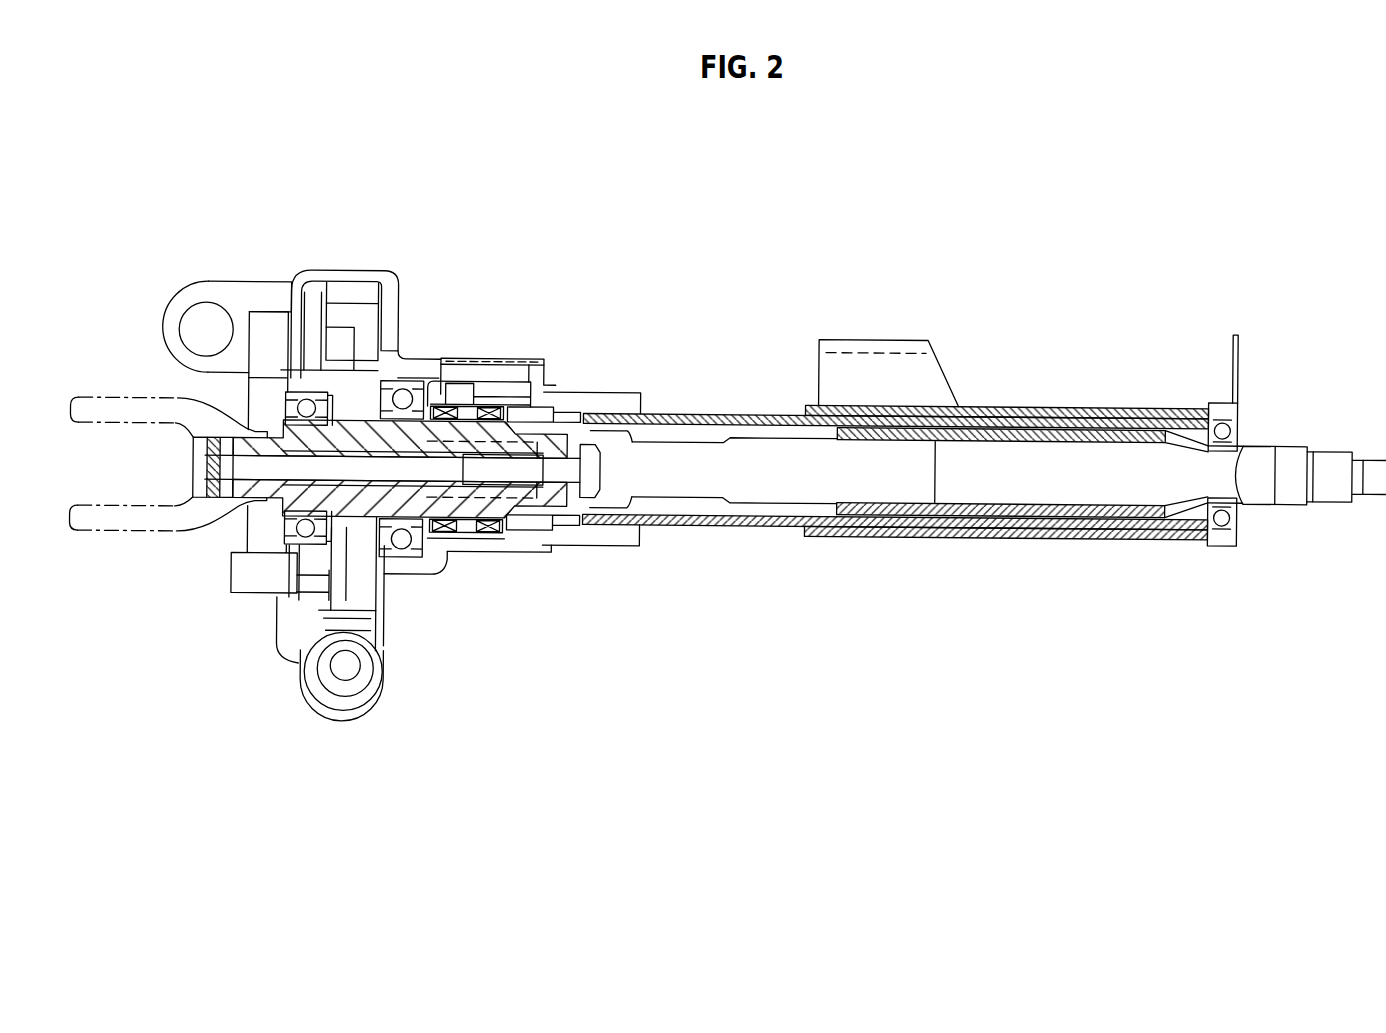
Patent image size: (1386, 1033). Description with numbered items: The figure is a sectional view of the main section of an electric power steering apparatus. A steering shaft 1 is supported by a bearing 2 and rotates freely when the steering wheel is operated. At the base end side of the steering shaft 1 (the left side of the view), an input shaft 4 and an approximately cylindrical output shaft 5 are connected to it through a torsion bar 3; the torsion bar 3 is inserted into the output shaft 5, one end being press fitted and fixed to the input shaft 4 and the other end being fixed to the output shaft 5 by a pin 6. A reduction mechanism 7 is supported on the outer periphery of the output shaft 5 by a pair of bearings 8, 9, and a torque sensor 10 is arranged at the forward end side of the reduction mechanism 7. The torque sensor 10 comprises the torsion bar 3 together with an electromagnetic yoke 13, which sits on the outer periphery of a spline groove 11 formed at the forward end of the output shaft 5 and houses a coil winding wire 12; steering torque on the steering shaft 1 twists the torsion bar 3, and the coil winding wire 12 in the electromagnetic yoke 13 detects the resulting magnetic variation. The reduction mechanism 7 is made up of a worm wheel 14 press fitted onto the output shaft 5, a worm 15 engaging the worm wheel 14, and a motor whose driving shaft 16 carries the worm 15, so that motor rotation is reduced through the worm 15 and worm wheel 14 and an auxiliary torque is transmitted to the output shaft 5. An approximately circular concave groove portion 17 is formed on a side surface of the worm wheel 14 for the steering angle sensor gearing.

The steering shaft 1 is at (1298, 440).
The bearing 2 is at (1236, 509).
The torsion bar 3 is at (518, 462).
The input shaft 4 is at (622, 543).
The output shaft 5 is at (283, 442).
The pin 6 is at (213, 460).
The reduction mechanism 7 is at (345, 733).
The bearing 8 is at (406, 550).
The bearing 9 is at (298, 528).
The torque sensor 10 is at (508, 540).
The spline groove 11 is at (445, 440).
The coil winding wire 12 is at (450, 550).
The electromagnetic yoke 13 is at (482, 403).
The worm wheel 14 is at (388, 293).
The worm 15 is at (367, 680).
The driving shaft 16 is at (340, 665).
The concave groove portion 17 is at (310, 334).